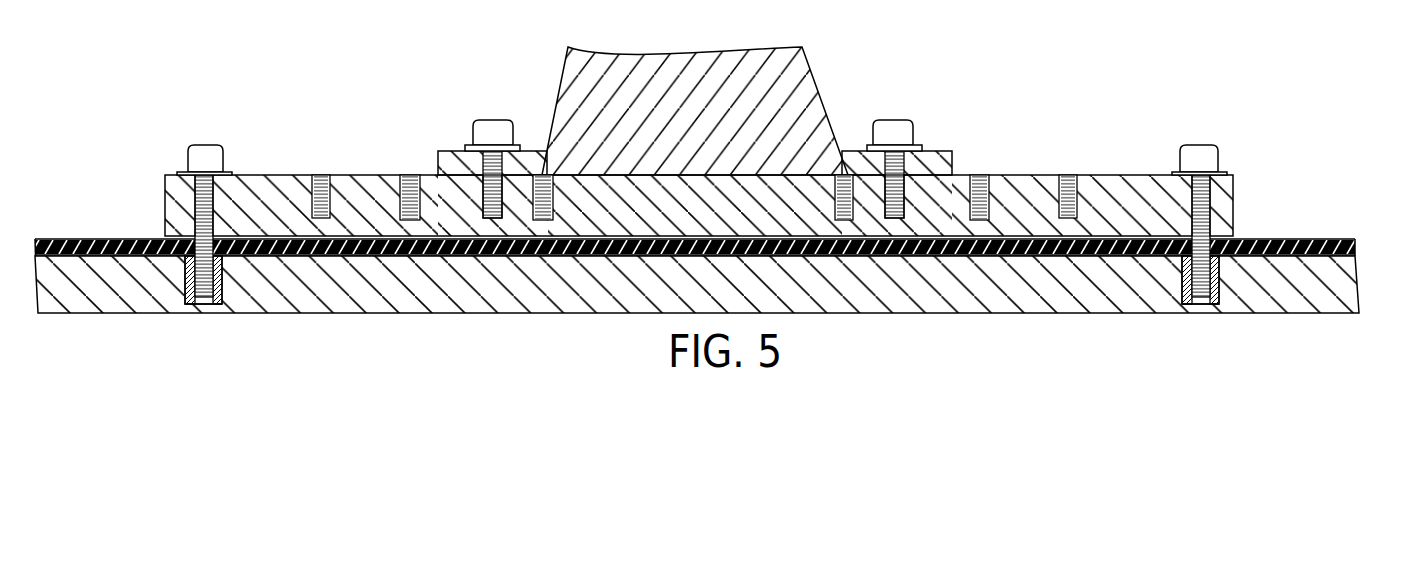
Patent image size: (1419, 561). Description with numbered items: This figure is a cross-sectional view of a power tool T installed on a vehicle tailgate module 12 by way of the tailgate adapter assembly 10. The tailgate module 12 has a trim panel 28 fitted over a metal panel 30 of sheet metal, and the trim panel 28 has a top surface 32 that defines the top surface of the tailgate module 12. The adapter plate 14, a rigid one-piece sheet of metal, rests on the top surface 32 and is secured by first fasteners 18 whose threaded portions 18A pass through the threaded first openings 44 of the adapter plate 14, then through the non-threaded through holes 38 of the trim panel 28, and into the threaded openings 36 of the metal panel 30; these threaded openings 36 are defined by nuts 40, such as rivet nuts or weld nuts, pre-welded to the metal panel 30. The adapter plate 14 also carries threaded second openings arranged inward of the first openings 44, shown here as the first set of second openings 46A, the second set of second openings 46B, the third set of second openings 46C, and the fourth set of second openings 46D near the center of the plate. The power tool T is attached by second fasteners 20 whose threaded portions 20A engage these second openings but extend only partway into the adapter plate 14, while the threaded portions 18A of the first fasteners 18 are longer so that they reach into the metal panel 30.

The tailgate adapter assembly 10 is at (1072, 59).
The tailgate module 12 is at (1317, 197).
The adapter plate 14 is at (1118, 168).
The first fasteners 18 is at (202, 143).
The threaded portions 18A is at (203, 208).
The second fasteners 20 is at (497, 120).
The threaded portions 20A is at (483, 178).
The trim panel 28 is at (1335, 245).
The metal panel 30 is at (1332, 278).
The top surface 32 is at (67, 238).
The threaded openings 36 is at (208, 290).
The through holes 38 is at (204, 220).
The nuts 40 is at (222, 288).
The first openings 44 is at (207, 172).
The first set of second openings 46A is at (318, 182).
The second set of second openings 46B is at (410, 198).
The third set of second openings 46C is at (483, 210).
The fourth set of second openings 46D is at (540, 183).
The power tool T is at (807, 57).